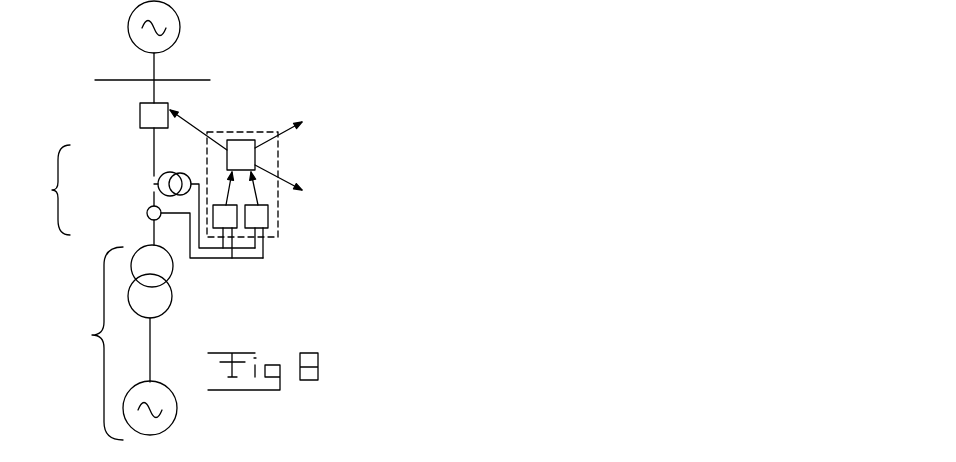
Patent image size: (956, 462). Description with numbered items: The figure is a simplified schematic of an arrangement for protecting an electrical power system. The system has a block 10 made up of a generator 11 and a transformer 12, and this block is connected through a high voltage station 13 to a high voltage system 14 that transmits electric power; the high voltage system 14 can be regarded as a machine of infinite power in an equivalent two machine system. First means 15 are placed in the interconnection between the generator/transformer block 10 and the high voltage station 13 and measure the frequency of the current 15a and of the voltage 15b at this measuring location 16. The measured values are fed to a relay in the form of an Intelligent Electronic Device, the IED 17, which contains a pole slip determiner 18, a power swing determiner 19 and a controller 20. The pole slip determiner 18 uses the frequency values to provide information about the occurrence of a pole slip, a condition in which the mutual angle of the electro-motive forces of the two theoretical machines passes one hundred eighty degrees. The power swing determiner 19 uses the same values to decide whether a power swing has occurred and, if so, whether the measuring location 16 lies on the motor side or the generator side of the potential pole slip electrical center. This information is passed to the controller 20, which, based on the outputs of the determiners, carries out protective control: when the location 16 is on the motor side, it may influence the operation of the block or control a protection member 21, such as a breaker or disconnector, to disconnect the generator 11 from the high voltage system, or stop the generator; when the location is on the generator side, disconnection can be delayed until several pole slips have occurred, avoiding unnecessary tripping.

The generator/transformer block 10 is at (89, 343).
The generator 11 is at (175, 417).
The transformer 12 is at (172, 283).
The high voltage station 13 is at (158, 80).
The high voltage system 14 is at (181, 27).
The first means 15 is at (41, 190).
The current measurement 15a is at (147, 218).
The voltage measurement 15b is at (155, 185).
The measuring location 16 is at (148, 195).
The Intelligent Electronic Device (IED) 17 is at (280, 163).
The pole slip determiner 18 is at (238, 228).
The power swing determiner 19 is at (268, 218).
The controller 20 is at (250, 133).
The protection member 21 is at (168, 104).